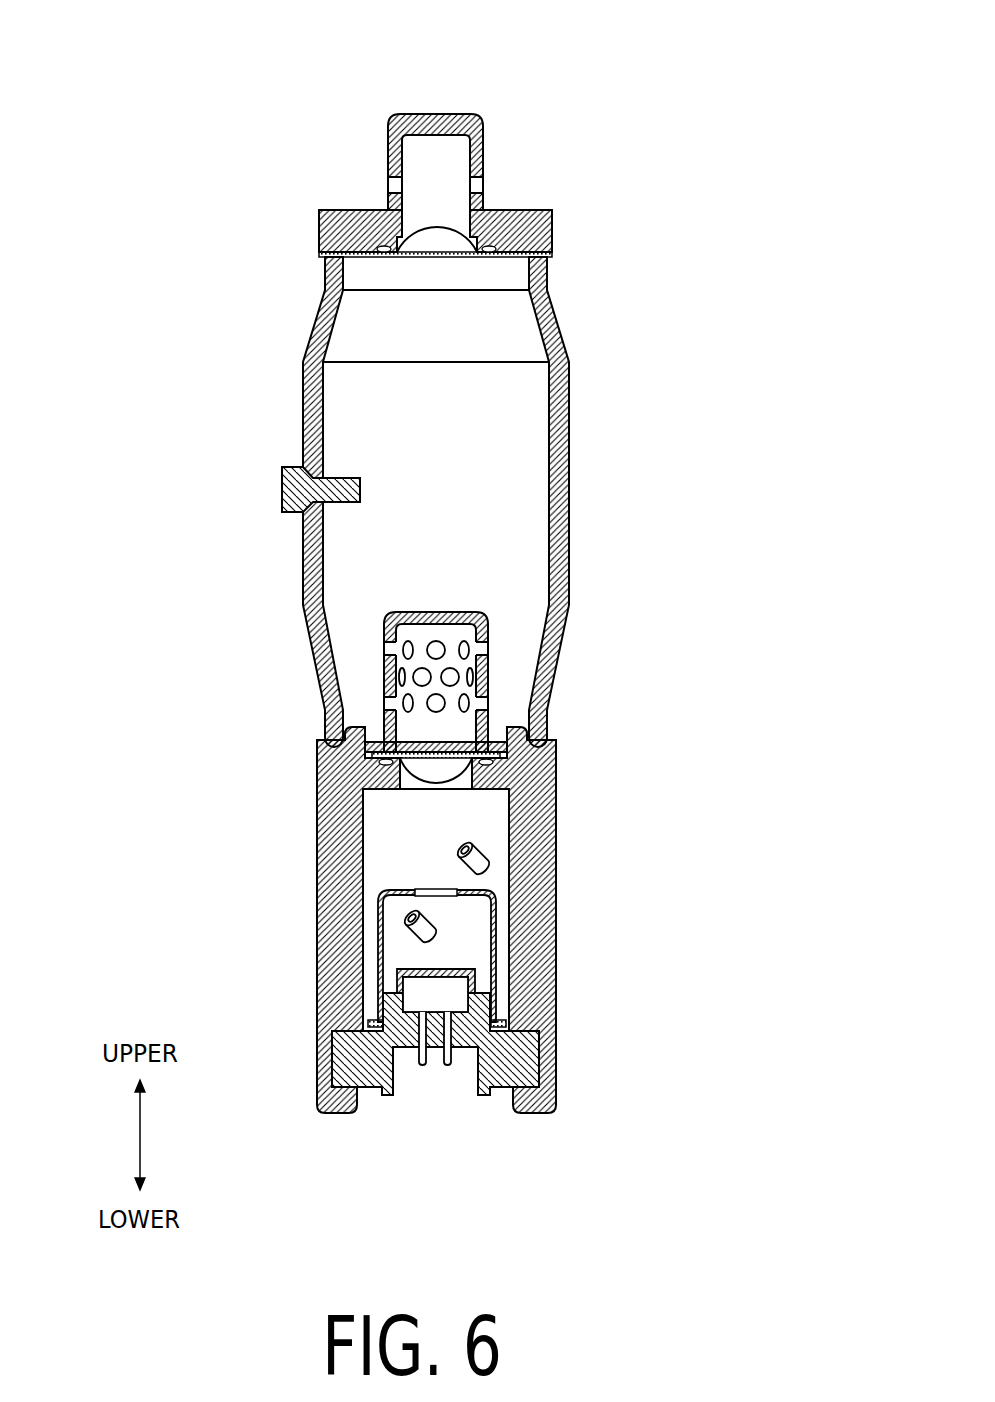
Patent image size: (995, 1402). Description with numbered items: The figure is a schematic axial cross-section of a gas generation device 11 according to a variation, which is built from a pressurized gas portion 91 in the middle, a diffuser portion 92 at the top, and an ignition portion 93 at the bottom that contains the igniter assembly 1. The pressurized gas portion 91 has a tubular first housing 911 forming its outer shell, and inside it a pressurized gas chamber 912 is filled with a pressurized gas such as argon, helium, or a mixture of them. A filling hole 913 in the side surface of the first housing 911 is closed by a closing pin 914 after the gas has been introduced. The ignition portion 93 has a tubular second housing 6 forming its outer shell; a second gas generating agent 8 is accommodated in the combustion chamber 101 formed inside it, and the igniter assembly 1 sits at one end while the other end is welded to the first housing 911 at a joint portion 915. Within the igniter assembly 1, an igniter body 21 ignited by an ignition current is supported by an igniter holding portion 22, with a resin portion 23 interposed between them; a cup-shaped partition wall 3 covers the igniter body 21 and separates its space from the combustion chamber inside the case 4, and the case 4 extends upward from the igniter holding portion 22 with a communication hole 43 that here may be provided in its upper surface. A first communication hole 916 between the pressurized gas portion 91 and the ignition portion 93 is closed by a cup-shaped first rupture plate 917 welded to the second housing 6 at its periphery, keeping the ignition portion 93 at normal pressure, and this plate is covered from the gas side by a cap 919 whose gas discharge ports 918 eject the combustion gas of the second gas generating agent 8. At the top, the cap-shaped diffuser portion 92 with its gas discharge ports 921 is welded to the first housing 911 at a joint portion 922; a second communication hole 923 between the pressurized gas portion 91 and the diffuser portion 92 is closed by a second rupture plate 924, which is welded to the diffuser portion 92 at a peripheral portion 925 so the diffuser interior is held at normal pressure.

The gas generation device 11 is at (241, 89).
The diffuser portion 92 is at (437, 114).
The gas discharge ports 921 is at (482, 188).
The second communication hole 923 is at (427, 238).
The second rupture plate 924 is at (552, 220).
The joint portion 922 is at (552, 242).
The peripheral portion 925 is at (385, 254).
The pressurized gas portion 91 is at (568, 404).
The first housing 911 is at (568, 535).
The pressurized gas chamber 912 is at (452, 530).
The filling hole 913 is at (337, 480).
The closing pin 914 is at (290, 498).
The cap 919 is at (488, 617).
The gas discharge ports 918 is at (488, 652).
The second housing 6 is at (556, 950).
The ignition portion 93 is at (556, 1012).
The joint portion 915 is at (318, 742).
The first communication hole 916 is at (408, 782).
The first rupture plate 917 is at (478, 772).
The combustion chamber 101 is at (447, 836).
The igniter assembly 1 is at (378, 912).
The case 4 is at (378, 945).
The communication hole 43 is at (436, 889).
The partition wall 3 is at (410, 932).
The second gas generating agent 8 is at (480, 852).
The igniter holding portion 22 is at (505, 1090).
The resin portion 23 is at (486, 1092).
The igniter body 21 is at (422, 1065).